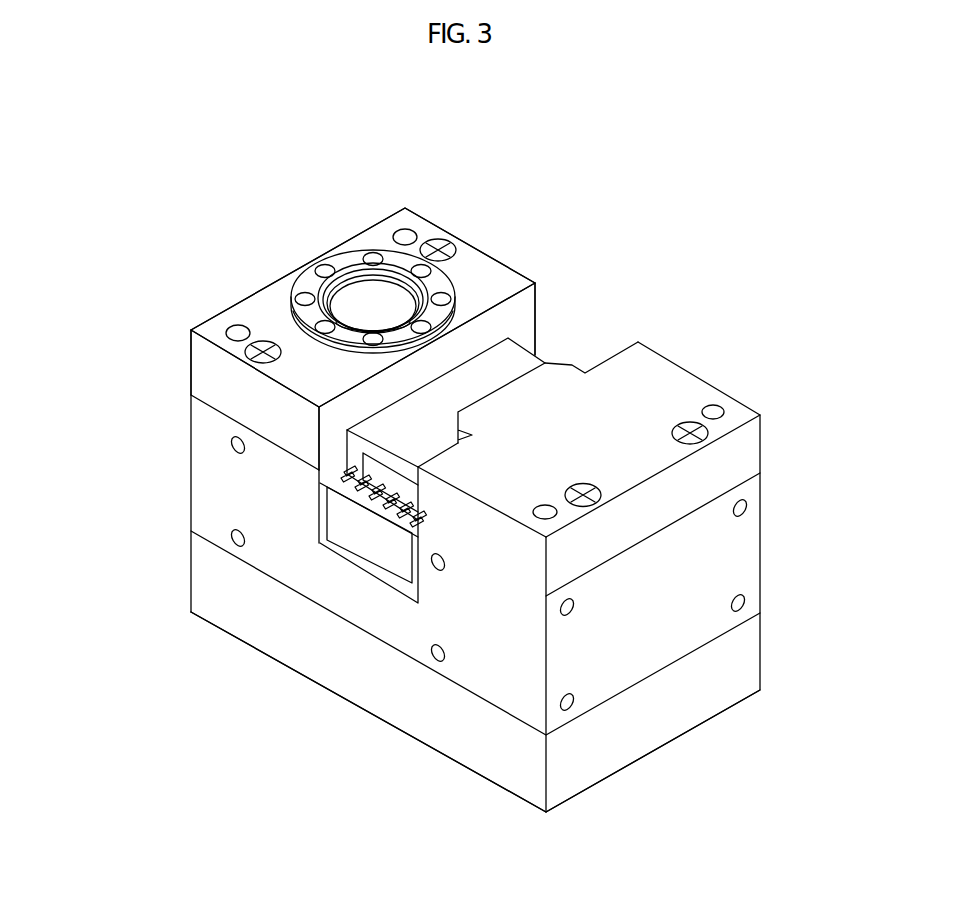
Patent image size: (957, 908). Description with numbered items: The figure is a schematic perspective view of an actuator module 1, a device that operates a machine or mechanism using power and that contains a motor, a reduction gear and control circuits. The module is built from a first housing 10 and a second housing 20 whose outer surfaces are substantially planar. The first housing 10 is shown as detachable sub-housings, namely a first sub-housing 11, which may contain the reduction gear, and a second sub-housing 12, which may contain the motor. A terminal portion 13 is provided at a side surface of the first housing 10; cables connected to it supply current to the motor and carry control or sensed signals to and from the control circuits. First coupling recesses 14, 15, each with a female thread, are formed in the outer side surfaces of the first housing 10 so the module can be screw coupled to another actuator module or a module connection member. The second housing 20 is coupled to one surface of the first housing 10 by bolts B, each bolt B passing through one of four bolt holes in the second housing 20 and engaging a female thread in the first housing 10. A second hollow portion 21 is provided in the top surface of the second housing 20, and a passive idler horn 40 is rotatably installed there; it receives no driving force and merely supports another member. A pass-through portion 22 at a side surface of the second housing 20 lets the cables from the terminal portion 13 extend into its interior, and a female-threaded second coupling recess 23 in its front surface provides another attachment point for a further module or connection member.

The actuator module 1 is at (598, 207).
The first housing 10 is at (96, 446).
The first sub-housing 11 is at (207, 568).
The second sub-housing 12 is at (207, 480).
The terminal portion 13 is at (372, 563).
The first coupling recess 14 is at (438, 658).
The first coupling recess 15 is at (574, 703).
The second housing 20 is at (207, 367).
The second hollow portion 21 is at (372, 298).
The pass-through portion 22 is at (393, 477).
The second coupling recess 23 is at (717, 409).
The idler horn 40 is at (437, 282).
The bolt B is at (262, 341).